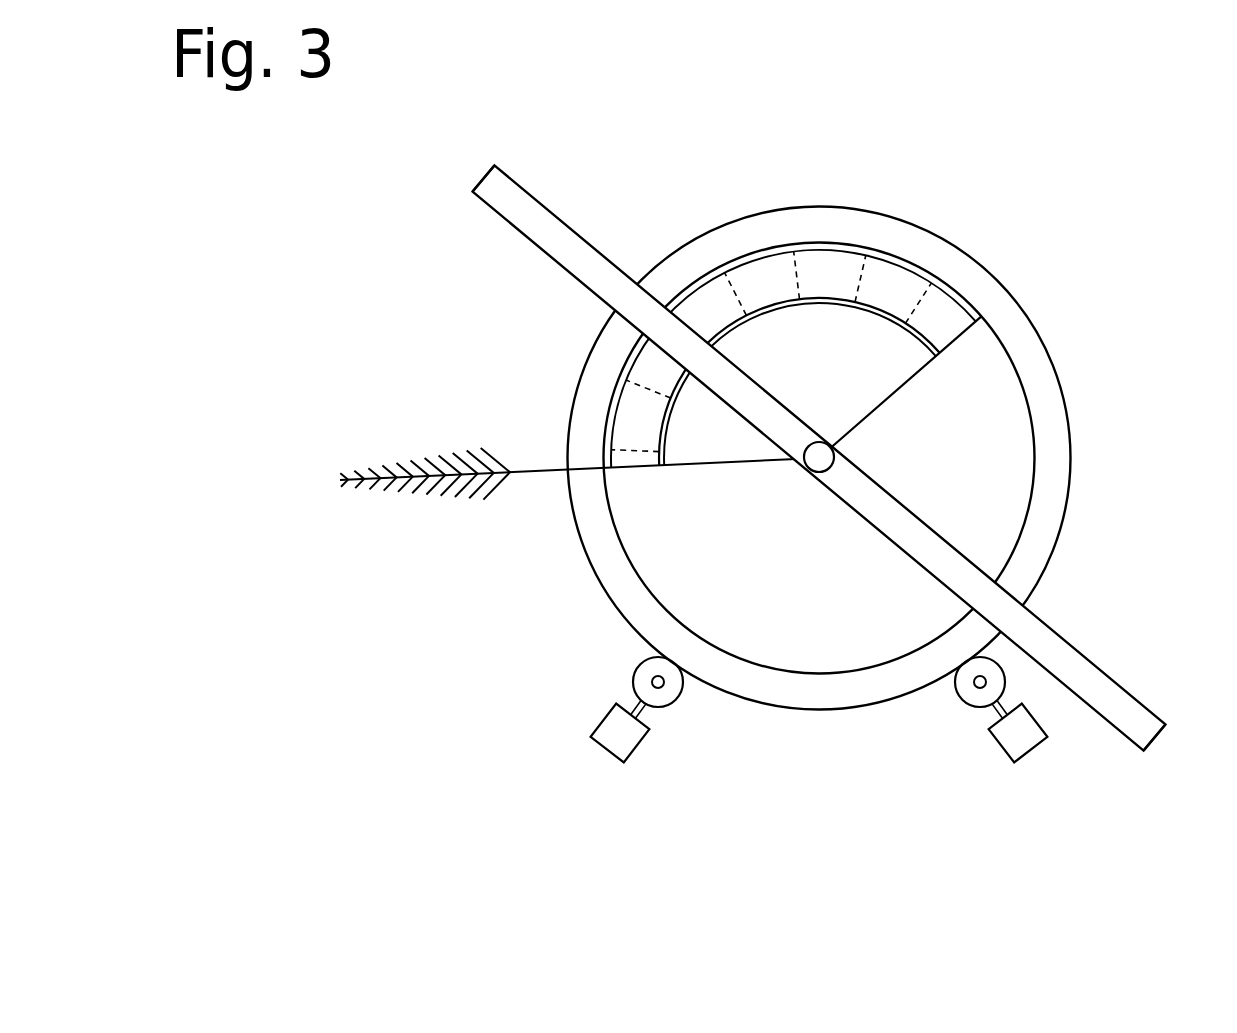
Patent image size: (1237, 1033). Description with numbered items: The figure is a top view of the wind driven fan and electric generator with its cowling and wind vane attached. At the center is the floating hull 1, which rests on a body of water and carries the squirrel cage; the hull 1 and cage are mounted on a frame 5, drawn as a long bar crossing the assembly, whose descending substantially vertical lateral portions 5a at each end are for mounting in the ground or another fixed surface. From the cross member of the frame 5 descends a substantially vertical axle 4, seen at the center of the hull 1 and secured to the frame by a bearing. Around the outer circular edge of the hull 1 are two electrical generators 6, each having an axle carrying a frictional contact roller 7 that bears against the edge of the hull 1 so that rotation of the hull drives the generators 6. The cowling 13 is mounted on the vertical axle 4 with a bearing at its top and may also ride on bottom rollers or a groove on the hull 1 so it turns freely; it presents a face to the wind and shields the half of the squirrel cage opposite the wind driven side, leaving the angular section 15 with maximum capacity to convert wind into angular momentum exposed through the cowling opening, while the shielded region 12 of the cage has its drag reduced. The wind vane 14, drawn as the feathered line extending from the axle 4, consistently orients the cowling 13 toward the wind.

The floating hull 1 is at (1090, 436).
The vertical axle 4 is at (851, 441).
The frame 5 is at (537, 250).
The lateral portions 5a is at (482, 178).
The electrical generator 6 is at (591, 737).
The frictional contact roller 7 is at (637, 668).
The segment region 12 is at (837, 270).
The cowling 13 is at (763, 627).
The wind vane 14 is at (433, 532).
The sector region 15 is at (853, 368).